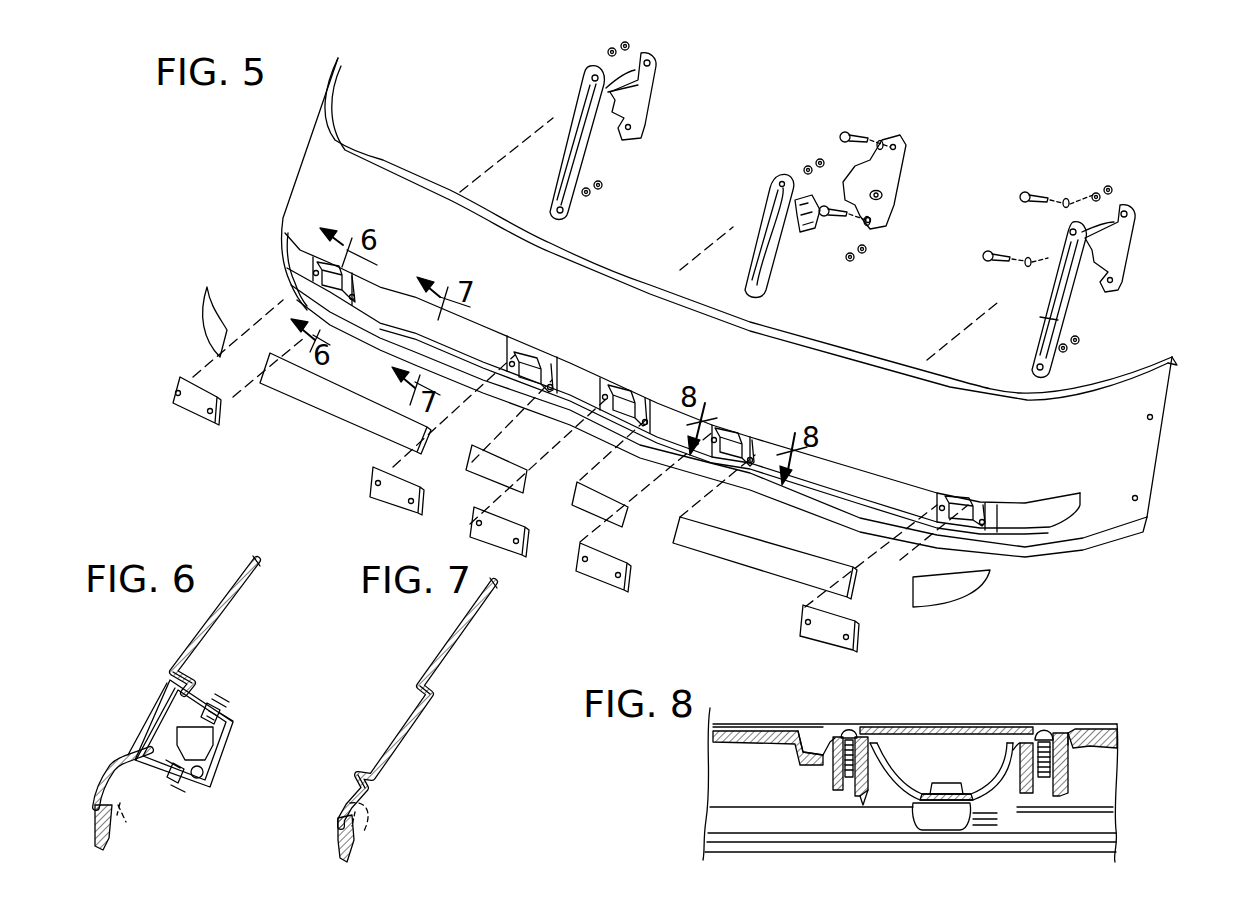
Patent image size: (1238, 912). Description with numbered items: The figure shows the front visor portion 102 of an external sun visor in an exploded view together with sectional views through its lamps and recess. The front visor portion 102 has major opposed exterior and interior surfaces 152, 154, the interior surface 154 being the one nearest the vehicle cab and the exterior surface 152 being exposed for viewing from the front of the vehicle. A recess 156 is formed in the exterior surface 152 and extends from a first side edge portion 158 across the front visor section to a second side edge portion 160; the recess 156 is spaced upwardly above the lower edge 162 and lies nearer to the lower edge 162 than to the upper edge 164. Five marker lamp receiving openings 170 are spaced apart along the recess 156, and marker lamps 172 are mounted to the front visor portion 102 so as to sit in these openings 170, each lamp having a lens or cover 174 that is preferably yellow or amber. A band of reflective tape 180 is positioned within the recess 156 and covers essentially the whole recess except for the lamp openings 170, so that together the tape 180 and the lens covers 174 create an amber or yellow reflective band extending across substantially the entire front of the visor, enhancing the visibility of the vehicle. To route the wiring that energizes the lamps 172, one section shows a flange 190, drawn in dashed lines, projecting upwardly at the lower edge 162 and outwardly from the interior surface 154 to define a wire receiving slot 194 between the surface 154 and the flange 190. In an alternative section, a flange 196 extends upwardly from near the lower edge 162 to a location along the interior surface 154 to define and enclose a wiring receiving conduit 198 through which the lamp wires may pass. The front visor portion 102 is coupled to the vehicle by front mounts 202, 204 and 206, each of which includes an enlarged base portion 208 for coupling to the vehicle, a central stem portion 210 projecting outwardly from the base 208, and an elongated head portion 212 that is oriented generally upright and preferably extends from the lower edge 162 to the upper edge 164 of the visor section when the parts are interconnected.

In FIG. 5, the front visor portion 102 is at (702, 337).
In FIG. 6, the front visor portion 102 is at (168, 705).
In FIG. 7, the front visor portion 102 is at (417, 733).
In FIG. 8, the front visor portion 102 is at (910, 766).
In FIG. 5, the exterior surface 152 is at (605, 310).
In FIG. 6, the exterior surface 152 is at (243, 593).
In FIG. 7, the exterior surface 152 is at (467, 608).
In FIG. 5, the interior surface 154 is at (617, 267).
In FIG. 6, the interior surface 154 is at (230, 588).
In FIG. 7, the interior surface 154 is at (470, 618).
In FIG. 5, the recess 156 is at (848, 462).
In FIG. 6, the recess 156 is at (165, 662).
In FIG. 7, the recess 156 is at (404, 682).
In FIG. 8, the recess 156 is at (777, 712).
In FIG. 5, the first side edge portion 158 is at (300, 162).
In FIG. 5, the second side edge portion 160 is at (1080, 474).
In FIG. 5, the lower edge 162 is at (1017, 559).
In FIG. 6, the lower edge 162 is at (100, 849).
In FIG. 7, the lower edge 162 is at (348, 862).
In FIG. 5, the upper edge 164 is at (867, 350).
In FIG. 5, the marker lamp receiving openings 170 is at (343, 280).
In FIG. 6, the marker lamp receiving openings 170 is at (143, 733).
In FIG. 8, the marker lamp receiving openings 170 is at (1017, 745).
In FIG. 6, the marker lamps 172 is at (180, 723).
In FIG. 8, the marker lamps 172 is at (910, 803).
In FIG. 5, the marker lamp lenses or covers 174 is at (200, 422).
In FIG. 6, the marker lamp lenses or covers 174 is at (147, 723).
In FIG. 8, the marker lamp lenses or covers 174 is at (937, 727).
In FIG. 5, the tape 180 is at (757, 557).
In FIG. 8, the tape 180 is at (730, 724).
In FIG. 6, the flange 190 is at (126, 822).
In FIG. 6, the wire receiving slot 194 is at (100, 797).
In FIG. 7, the flange 196 is at (370, 815).
In FIG. 7, the wiring receiving conduit 198 is at (350, 802).
In FIG. 5, the front mount 202 is at (672, 74).
In FIG. 5, the front mount 204 is at (940, 161).
In FIG. 5, the front mount 206 is at (1082, 181).
In FIG. 5, the base portion 208 is at (657, 53).
In FIG. 5, the stem portion 210 is at (617, 120).
In FIG. 5, the head portion 212 is at (580, 108).